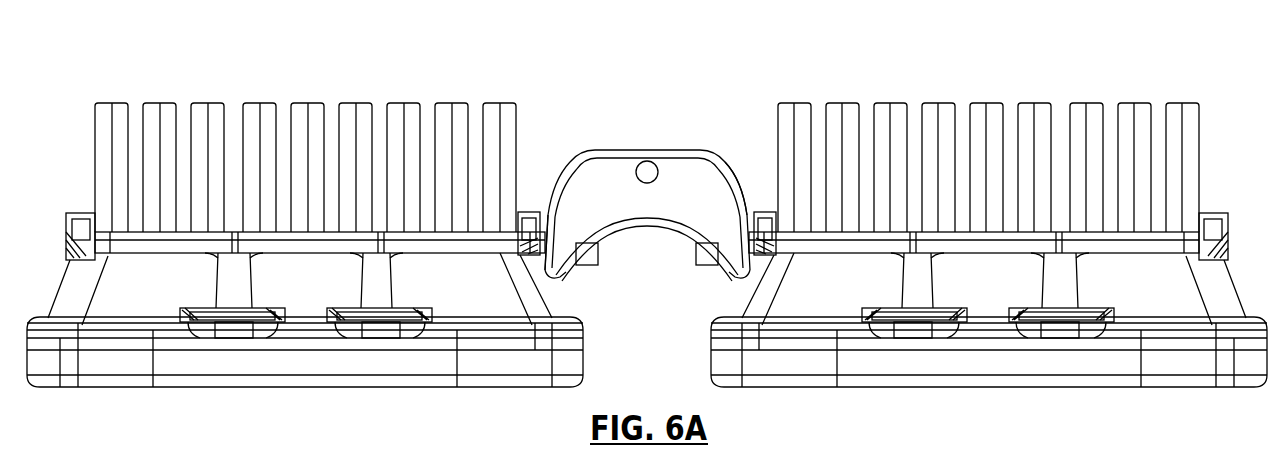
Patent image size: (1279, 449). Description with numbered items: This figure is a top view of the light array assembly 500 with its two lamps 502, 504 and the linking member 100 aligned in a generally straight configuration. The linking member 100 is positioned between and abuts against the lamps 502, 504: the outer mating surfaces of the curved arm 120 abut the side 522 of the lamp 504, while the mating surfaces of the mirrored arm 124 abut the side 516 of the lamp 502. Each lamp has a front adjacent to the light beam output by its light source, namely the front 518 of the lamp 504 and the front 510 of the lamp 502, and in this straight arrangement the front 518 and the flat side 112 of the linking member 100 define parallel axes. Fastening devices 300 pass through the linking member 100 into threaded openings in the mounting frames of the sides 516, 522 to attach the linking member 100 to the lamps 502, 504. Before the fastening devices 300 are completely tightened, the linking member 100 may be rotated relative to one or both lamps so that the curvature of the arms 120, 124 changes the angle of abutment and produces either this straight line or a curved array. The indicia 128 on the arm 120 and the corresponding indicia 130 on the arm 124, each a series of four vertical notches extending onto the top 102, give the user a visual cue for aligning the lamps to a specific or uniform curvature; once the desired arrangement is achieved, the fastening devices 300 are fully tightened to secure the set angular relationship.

The light array assembly 500 is at (647, 214).
The lamp 504 is at (328, 85).
The lamp 502 is at (960, 85).
The front 518 is at (275, 388).
The front 510 is at (945, 388).
The side 522 is at (531, 205).
The side 516 is at (760, 212).
The linking member 100 is at (647, 172).
The top 102 is at (672, 165).
The side 112 is at (646, 153).
The arm 124 is at (745, 165).
The arm 120 is at (547, 205).
The indicia 128 is at (562, 234).
The indicia 130 is at (736, 232).
The fastening device 300 is at (596, 266).